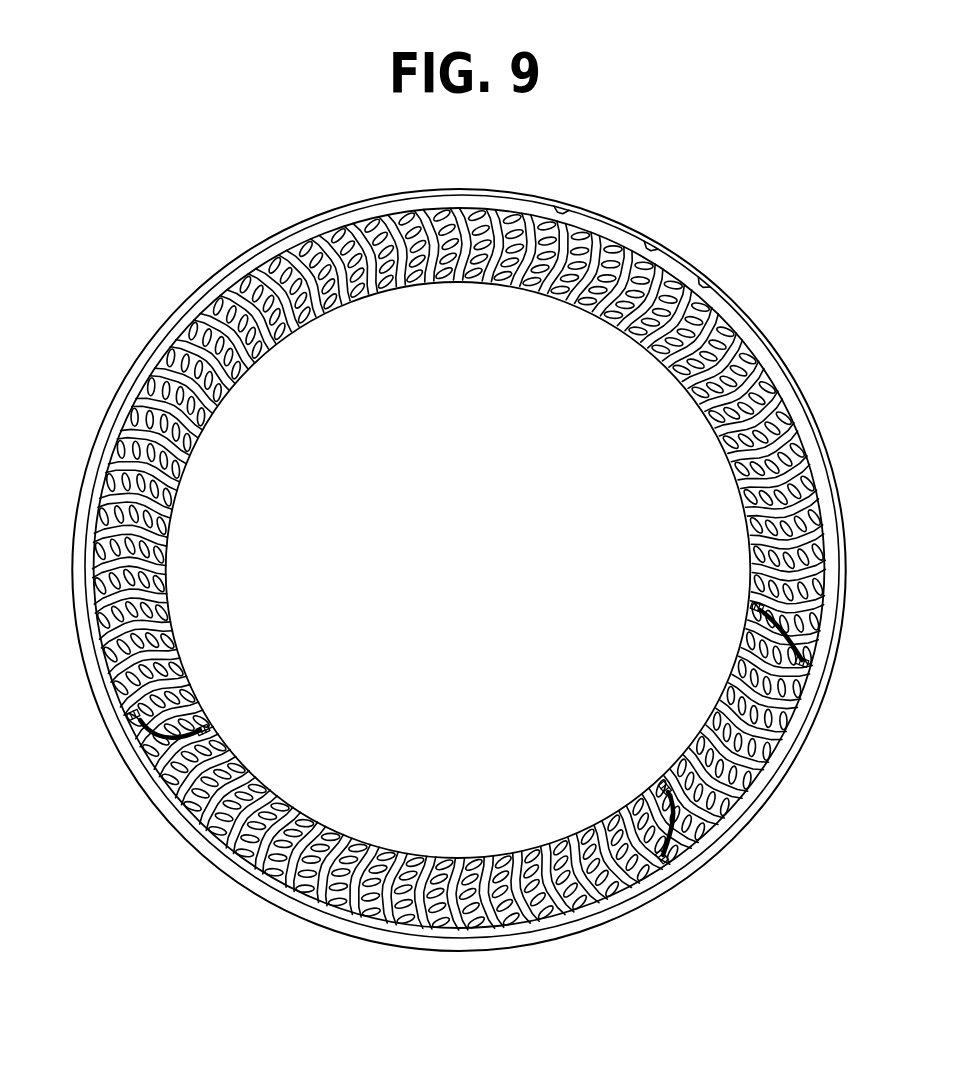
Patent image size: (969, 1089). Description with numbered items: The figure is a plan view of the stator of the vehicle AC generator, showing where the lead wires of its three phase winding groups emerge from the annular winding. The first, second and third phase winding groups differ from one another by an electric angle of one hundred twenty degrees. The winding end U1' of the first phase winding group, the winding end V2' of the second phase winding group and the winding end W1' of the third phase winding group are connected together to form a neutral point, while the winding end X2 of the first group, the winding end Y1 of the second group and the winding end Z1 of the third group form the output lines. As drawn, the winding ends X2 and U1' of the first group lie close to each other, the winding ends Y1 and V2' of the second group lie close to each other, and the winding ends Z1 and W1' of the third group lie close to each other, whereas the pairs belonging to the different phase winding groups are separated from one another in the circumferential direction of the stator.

The winding end of the first phase winding group X2 is at (127, 717).
The winding end of the first phase winding group U1' is at (251, 709).
The winding end of the second phase winding group V2' is at (723, 608).
The winding end of the second phase winding group Y1 is at (806, 664).
The winding end of the third phase winding group W1' is at (635, 774).
The winding end of the third phase winding group Z1 is at (663, 860).